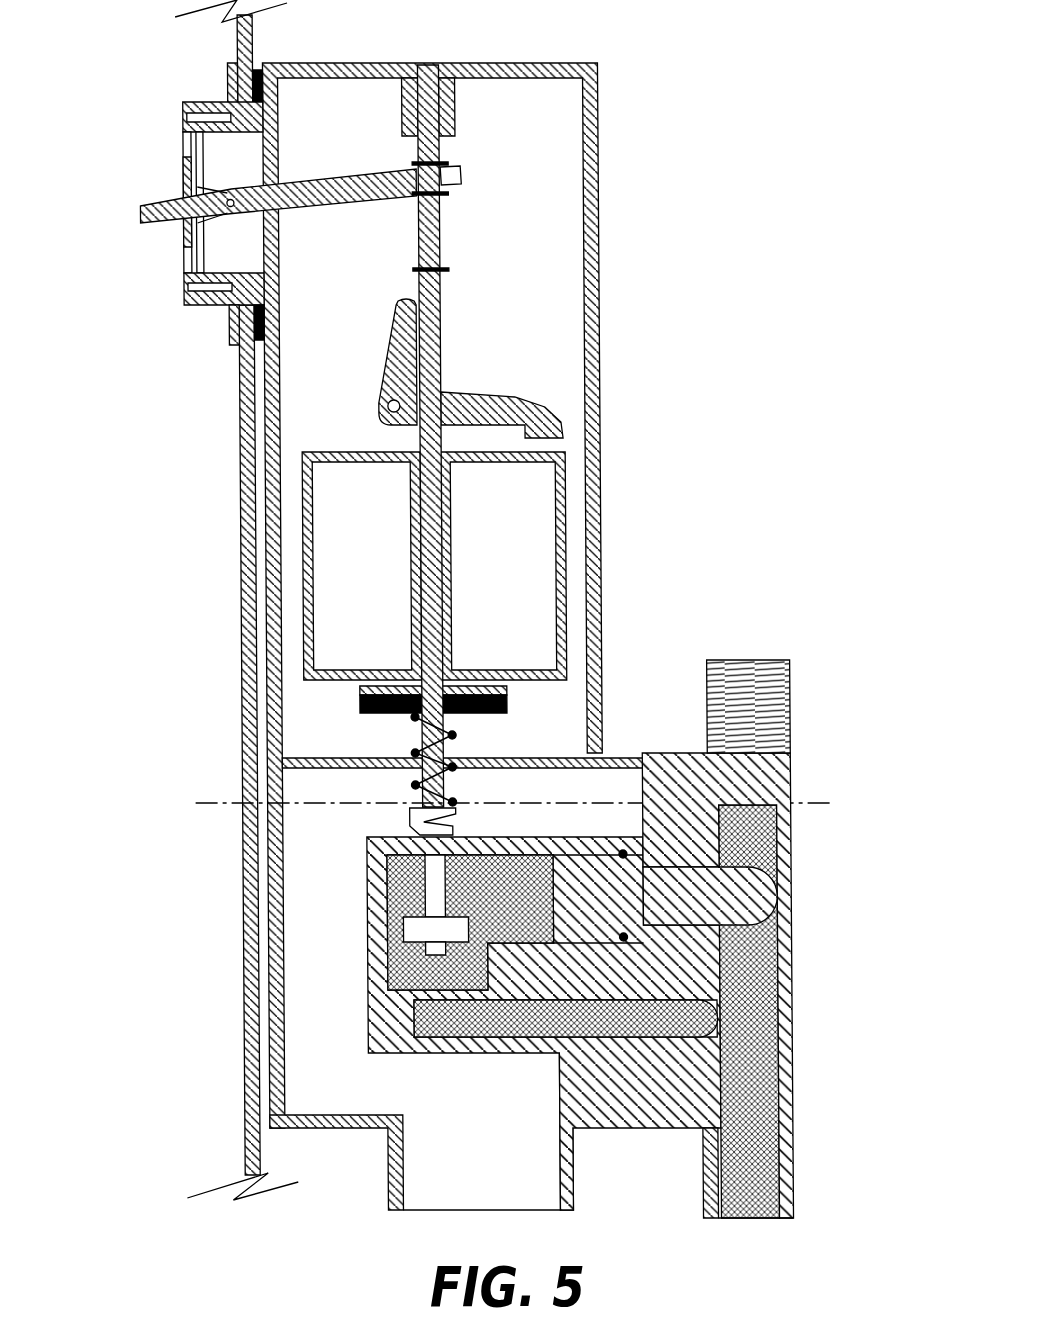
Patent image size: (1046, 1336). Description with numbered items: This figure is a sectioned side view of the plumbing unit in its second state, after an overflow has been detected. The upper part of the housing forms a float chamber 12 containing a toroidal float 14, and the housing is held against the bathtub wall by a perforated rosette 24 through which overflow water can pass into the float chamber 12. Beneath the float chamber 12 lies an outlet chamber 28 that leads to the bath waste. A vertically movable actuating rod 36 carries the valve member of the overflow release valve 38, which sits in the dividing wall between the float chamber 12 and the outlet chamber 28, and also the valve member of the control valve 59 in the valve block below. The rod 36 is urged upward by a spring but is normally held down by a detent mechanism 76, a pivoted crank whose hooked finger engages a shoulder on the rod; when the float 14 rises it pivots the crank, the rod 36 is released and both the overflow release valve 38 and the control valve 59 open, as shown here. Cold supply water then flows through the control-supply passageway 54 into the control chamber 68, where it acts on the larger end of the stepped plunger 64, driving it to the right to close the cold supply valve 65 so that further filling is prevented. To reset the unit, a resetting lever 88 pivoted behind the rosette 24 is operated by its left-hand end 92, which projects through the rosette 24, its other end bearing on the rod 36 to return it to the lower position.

The float chamber 12 is at (319, 351).
The float 14 is at (561, 513).
The perforated rosette 24 is at (177, 138).
The outlet chamber 28 is at (296, 988).
The actuating rod 36 is at (428, 343).
The overflow release valve 38 is at (377, 740).
The control-supply passageway 54 is at (521, 1023).
The control valve 59 is at (398, 965).
The plunger 64 is at (779, 1005).
The cold supply valve 65 is at (760, 890).
The control chamber 68 is at (374, 882).
The detent mechanism 76 is at (475, 378).
The resetting lever 88 is at (305, 206).
The left-hand end 92 is at (124, 228).